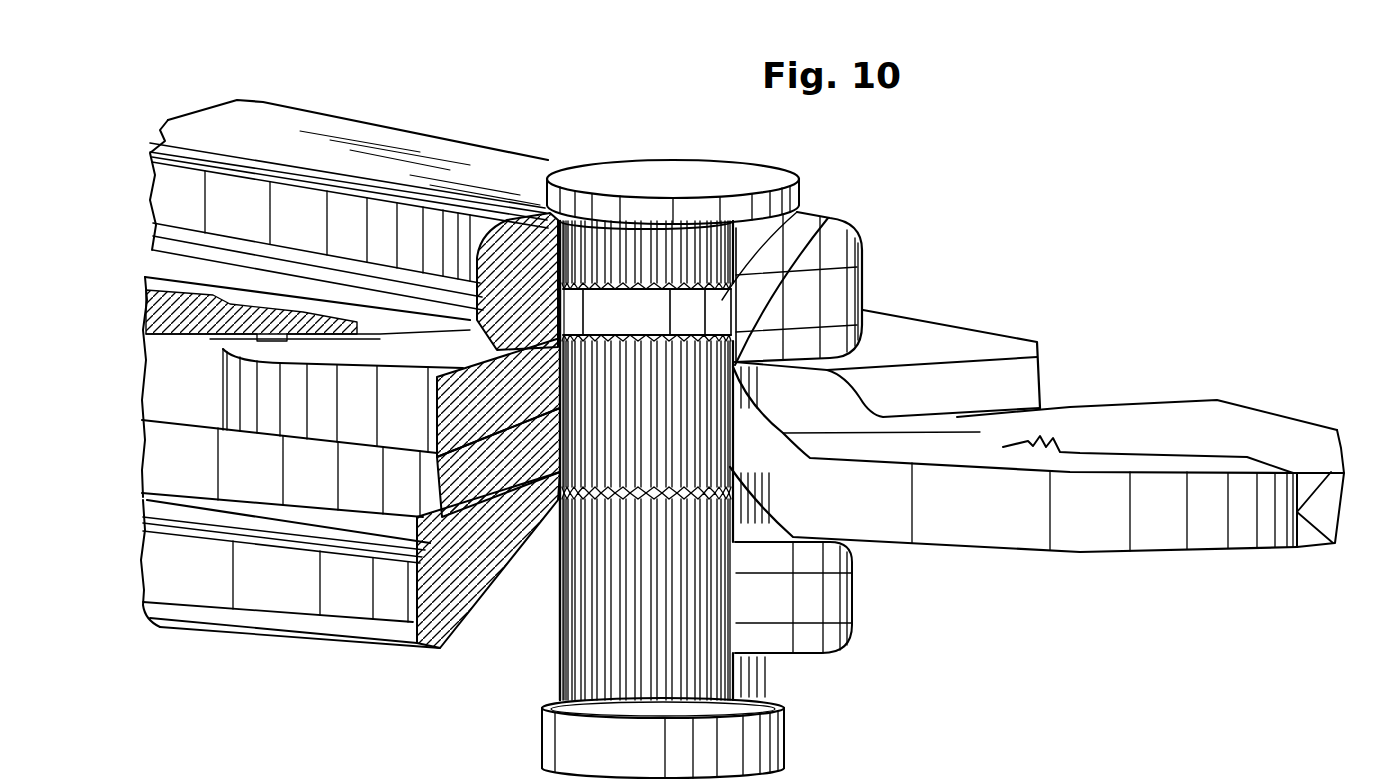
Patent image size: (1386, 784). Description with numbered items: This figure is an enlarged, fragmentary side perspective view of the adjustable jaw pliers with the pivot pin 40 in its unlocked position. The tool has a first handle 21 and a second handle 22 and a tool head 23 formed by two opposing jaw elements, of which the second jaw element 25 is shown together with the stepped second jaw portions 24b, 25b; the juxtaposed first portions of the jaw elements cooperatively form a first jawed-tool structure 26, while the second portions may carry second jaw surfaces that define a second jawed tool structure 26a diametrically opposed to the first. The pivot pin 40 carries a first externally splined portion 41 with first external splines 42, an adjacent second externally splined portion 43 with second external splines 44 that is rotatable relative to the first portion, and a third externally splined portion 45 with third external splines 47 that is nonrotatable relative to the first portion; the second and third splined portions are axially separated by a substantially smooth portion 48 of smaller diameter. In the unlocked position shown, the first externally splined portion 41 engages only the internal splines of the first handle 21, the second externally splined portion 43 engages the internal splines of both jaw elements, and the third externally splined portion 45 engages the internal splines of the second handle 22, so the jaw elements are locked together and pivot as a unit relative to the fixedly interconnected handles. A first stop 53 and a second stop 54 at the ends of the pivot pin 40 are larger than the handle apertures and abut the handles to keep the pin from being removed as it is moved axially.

The first handle 21 is at (247, 620).
The second handle 22 is at (452, 147).
The tool head 23 is at (1102, 372).
The second jaw portion of the first jaw element 24b is at (1003, 533).
The second jaw element 25 is at (920, 335).
The second jaw portion of the second jaw element 25b is at (990, 348).
The first jawed-tool structure 26 is at (140, 337).
The second jawed tool structure 26a is at (1313, 560).
The pivot pin 40 is at (757, 167).
The first externally splined portion 41 is at (557, 680).
The first external splines 42 is at (562, 645).
The second externally splined portion 43 is at (550, 465).
The second external splines 44 is at (733, 367).
The third externally splined portion 45 is at (797, 213).
The third external splines 47 is at (703, 253).
The substantially smooth portion 48 is at (713, 318).
The first stop 53 is at (690, 176).
The second stop 54 is at (763, 743).